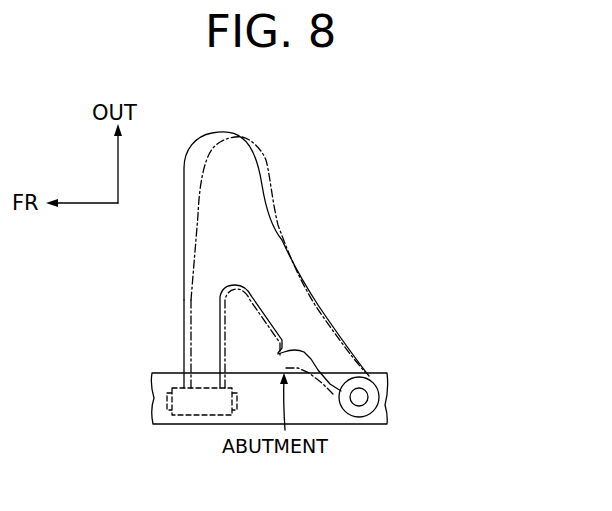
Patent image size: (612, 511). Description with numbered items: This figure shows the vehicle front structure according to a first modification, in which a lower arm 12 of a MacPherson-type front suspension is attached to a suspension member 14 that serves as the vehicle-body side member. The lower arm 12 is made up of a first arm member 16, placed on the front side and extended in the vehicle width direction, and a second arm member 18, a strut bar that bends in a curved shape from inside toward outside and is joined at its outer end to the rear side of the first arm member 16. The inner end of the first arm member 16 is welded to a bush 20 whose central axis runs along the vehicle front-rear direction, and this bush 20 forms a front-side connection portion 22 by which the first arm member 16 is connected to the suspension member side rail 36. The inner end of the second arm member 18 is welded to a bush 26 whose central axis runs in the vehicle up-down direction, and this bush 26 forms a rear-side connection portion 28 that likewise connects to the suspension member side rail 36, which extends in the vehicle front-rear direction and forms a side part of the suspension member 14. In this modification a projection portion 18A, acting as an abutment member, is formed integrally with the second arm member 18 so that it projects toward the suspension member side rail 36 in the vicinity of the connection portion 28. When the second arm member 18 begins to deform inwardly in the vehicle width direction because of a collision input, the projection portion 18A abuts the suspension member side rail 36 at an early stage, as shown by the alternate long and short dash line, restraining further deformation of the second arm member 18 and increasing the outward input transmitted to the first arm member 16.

The lower arm 12 is at (313, 222).
The suspension member 14 is at (143, 409).
The first arm member 16 is at (183, 297).
The second arm member 18 is at (323, 302).
The projection portion 18A is at (278, 355).
The bush 20 is at (165, 398).
The connection portion 22 is at (172, 373).
The bush 26 is at (380, 397).
The connection portion 28 is at (381, 364).
The suspension member side rail 36 is at (152, 413).